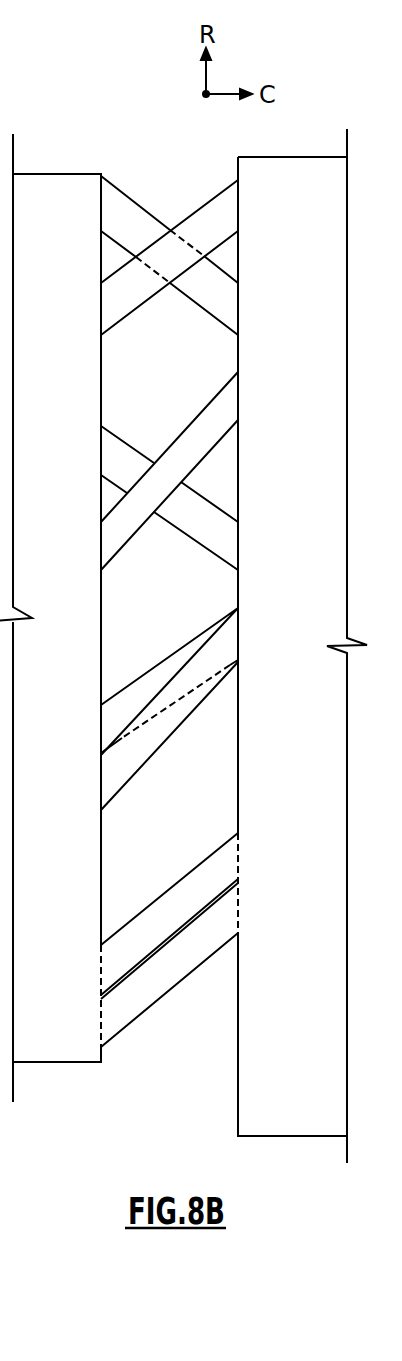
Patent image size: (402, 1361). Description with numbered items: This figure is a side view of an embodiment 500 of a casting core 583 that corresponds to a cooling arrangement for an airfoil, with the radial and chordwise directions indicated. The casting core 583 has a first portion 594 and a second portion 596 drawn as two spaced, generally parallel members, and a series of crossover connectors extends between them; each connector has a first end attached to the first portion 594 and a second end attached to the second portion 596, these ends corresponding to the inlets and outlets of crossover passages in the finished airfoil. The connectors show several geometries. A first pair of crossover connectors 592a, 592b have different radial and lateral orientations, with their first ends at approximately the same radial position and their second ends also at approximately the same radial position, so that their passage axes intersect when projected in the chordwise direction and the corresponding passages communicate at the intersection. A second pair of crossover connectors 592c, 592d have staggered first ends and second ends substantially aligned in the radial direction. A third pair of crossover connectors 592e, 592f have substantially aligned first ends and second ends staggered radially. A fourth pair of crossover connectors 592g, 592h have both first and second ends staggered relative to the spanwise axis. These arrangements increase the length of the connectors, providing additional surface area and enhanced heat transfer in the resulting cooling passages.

The embodiment 500 is at (84, 58).
The casting core 583 is at (94, 116).
The first portion 594 is at (278, 156).
The second portion 596 is at (35, 173).
The crossover connector 592a is at (123, 192).
The crossover connector 592b is at (207, 202).
The crossover connector 592c is at (113, 428).
The crossover connector 592d is at (207, 405).
The crossover connector 592e is at (155, 748).
The crossover connector 592f is at (190, 643).
The crossover connector 592g is at (148, 1009).
The crossover connector 592h is at (193, 868).